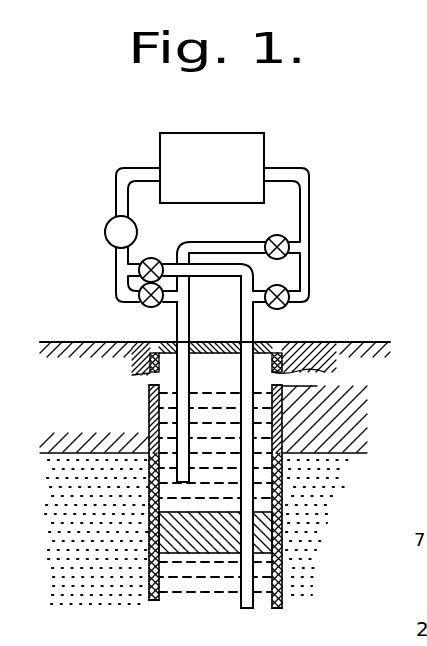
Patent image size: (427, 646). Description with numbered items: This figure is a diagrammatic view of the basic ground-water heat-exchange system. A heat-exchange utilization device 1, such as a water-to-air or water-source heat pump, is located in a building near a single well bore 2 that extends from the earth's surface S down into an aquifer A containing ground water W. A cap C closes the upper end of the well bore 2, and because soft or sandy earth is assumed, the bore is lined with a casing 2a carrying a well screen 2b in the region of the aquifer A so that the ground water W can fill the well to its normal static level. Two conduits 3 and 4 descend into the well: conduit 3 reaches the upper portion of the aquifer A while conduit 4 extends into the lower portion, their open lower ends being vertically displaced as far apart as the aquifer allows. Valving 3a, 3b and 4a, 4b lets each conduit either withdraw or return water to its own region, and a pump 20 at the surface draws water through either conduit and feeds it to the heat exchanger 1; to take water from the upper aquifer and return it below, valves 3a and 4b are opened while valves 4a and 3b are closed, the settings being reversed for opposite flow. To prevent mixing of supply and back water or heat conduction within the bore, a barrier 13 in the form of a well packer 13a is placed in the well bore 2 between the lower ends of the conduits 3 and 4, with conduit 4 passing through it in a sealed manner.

The heat-exchange utilization device 1 is at (248, 133).
The pump 20 is at (105, 232).
The valve 4a is at (157, 257).
The valve 3a is at (142, 307).
The valve 3b is at (279, 235).
The valve 4b is at (285, 308).
The conduit 3 is at (175, 412).
The conduit 4 is at (241, 590).
The well bore 2 is at (143, 445).
The casing 2a is at (149, 386).
The well screen 2b is at (148, 586).
The barrier 13 is at (264, 538).
The well packer 13a is at (215, 546).
The earth's surface S is at (344, 338).
The cap C is at (225, 337).
The ground water W is at (222, 386).
The aquifer A is at (72, 514).